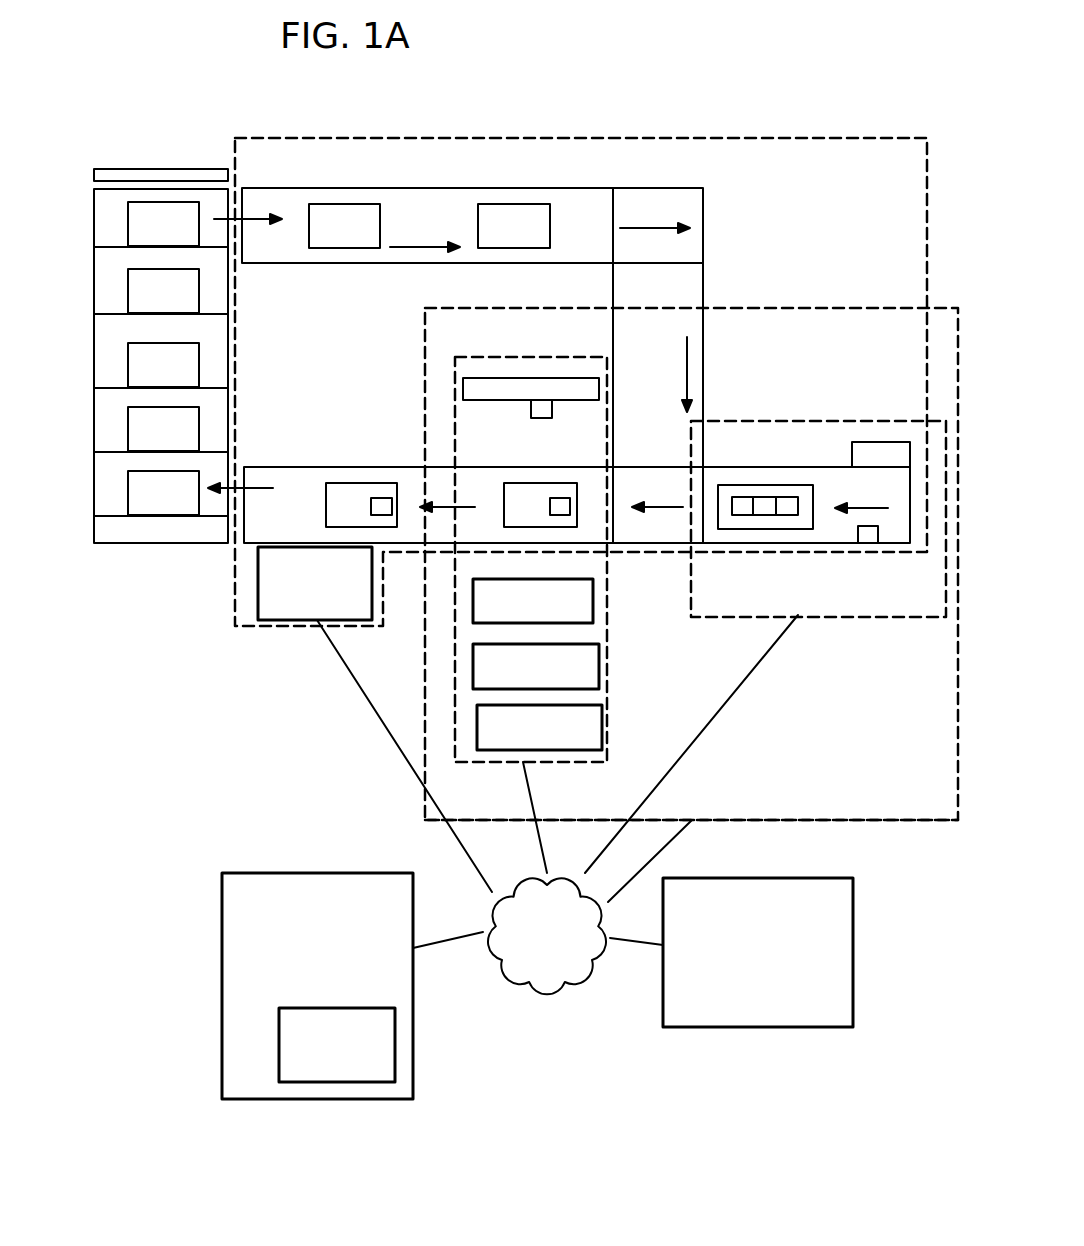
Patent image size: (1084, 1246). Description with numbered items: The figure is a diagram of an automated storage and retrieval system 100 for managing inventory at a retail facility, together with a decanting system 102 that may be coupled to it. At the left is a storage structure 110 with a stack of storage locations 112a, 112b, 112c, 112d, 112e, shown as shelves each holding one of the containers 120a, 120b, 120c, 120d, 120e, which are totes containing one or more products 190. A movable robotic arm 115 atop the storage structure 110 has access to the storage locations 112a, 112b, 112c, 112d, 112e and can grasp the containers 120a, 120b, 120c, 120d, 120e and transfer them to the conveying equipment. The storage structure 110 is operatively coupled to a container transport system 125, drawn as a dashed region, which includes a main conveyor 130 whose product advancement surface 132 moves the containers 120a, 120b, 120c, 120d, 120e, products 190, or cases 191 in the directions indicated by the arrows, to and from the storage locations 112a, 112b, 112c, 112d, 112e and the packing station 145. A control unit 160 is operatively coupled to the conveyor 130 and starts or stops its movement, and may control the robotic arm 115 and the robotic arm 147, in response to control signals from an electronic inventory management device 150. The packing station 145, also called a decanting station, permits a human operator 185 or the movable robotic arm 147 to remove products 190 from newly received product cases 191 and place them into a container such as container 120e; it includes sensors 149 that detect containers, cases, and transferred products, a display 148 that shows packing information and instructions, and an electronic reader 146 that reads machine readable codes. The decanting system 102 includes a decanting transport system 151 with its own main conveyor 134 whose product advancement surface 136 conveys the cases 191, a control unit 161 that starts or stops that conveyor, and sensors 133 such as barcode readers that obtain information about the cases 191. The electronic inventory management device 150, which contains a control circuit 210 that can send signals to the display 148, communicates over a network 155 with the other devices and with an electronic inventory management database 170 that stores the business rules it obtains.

The automated storage and retrieval system 100 is at (661, 104).
The decanting system 102 is at (900, 820).
The storage structure 110 is at (168, 543).
The storage location 112a is at (110, 247).
The storage location 112b is at (110, 314).
The storage location 112c is at (110, 388).
The storage location 112d is at (110, 452).
The storage location 112e is at (110, 516).
The movable robotic arm 115 is at (163, 169).
The container 120a is at (200, 500).
The container 120b is at (199, 442).
The container 120c is at (199, 372).
The container 120d is at (199, 303).
The container 120e is at (128, 217).
The container transport system 125 is at (745, 138).
The main conveyor 130 is at (678, 327).
The product advancement surface 132 is at (302, 251).
The sensor 133 is at (870, 543).
The main conveyor 134 is at (827, 537).
The product advancement surface 136 is at (887, 494).
The packing station 145 is at (565, 762).
The electronic reader 146 is at (593, 597).
The movable robotic arm 147 is at (487, 378).
The display 148 is at (508, 642).
The sensor 149 is at (530, 405).
The electronic inventory management device 150 is at (222, 910).
The decanting transport system 151 is at (882, 617).
The network 155 is at (560, 997).
The control unit 160 is at (285, 620).
The control unit 161 is at (865, 465).
The electronic inventory management database 170 is at (853, 947).
The human operator 185 is at (487, 750).
The product 190 is at (383, 502).
The product case 191 is at (733, 482).
The control circuit 210 is at (279, 1027).